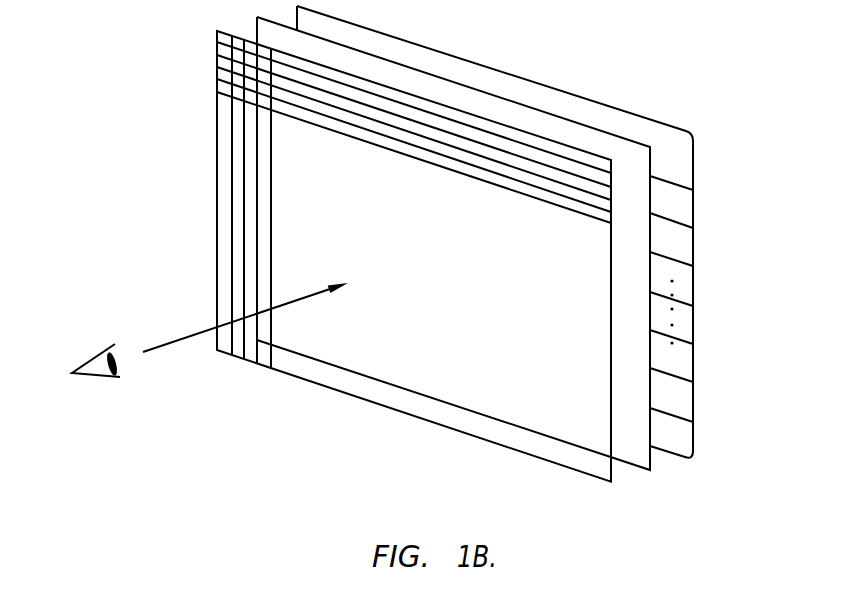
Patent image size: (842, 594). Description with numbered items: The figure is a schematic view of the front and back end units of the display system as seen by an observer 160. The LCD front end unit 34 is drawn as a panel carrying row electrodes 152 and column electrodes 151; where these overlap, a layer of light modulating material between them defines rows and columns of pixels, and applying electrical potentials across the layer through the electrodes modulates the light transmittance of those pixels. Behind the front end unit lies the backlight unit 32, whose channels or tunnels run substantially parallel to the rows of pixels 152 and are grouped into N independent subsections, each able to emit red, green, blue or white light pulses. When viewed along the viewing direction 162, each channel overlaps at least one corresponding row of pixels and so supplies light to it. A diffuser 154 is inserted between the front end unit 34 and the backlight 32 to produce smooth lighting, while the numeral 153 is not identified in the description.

The backlight unit 32 is at (692, 438).
The LCD front end unit 34 is at (576, 471).
The column electrodes 151 is at (240, 210).
The row electrodes 152 is at (453, 140).
The light source element 153 is at (686, 203).
The diffuser 154 is at (631, 167).
The observer 160 is at (103, 352).
The viewing direction 162 is at (200, 332).